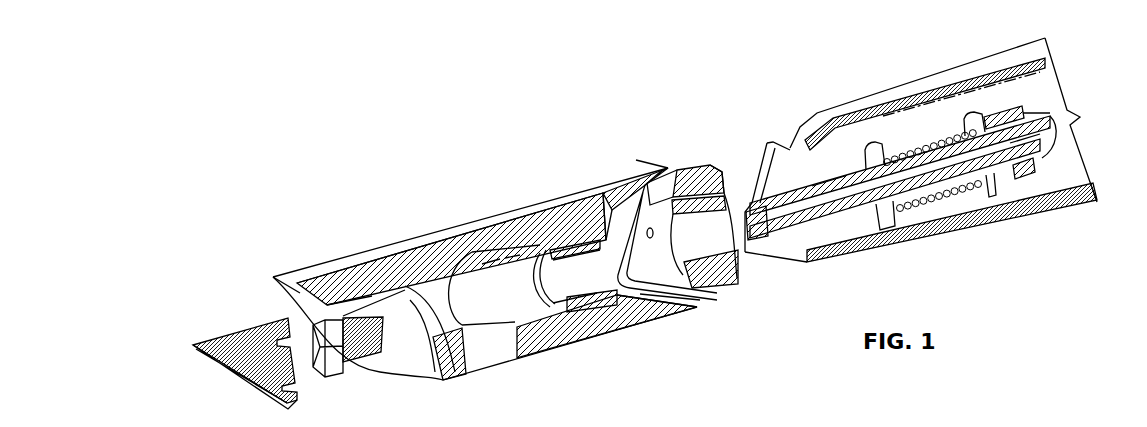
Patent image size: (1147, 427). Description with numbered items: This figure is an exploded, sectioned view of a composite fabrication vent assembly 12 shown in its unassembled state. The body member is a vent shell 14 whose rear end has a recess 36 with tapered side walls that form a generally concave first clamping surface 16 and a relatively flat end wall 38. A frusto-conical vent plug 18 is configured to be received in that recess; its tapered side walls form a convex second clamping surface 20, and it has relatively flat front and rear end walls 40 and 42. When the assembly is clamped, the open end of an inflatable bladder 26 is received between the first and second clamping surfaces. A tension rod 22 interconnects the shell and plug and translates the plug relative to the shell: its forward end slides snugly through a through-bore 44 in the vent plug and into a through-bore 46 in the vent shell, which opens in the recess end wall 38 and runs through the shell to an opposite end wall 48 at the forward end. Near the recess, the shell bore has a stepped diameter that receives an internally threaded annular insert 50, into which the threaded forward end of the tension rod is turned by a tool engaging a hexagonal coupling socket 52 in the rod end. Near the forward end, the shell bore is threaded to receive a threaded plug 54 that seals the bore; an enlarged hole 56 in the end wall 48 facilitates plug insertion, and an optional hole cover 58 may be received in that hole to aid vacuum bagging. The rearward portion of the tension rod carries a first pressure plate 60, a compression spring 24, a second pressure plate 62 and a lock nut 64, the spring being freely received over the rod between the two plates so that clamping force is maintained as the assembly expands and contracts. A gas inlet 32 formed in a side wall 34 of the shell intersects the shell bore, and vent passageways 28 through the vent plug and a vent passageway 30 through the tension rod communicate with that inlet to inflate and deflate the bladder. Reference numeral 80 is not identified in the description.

The composite fabrication vent assembly 12 is at (284, 168).
The vent shell 14 is at (381, 248).
The first clamping surface 16 is at (628, 307).
The vent plug 18 is at (692, 167).
The second clamping surface 20 is at (680, 180).
The tension rod 22 is at (847, 167).
The compression spring 24 is at (903, 147).
The inflatable bladder 26 is at (636, 163).
The vent passageways 28 is at (622, 192).
The vent passageway 30 is at (1020, 163).
The gas inlet 32 is at (483, 325).
The side wall 34 is at (557, 350).
The recess 36 is at (700, 308).
The end wall 38 is at (605, 207).
The front end wall 40 is at (692, 295).
The rear end wall 42 is at (720, 173).
The through-bore 44 is at (747, 243).
The through-bore 46 is at (507, 300).
The end wall 48 is at (278, 284).
The annular insert 50 is at (598, 302).
The coupling socket 52 is at (797, 230).
The threaded plug 54 is at (345, 372).
The enlarged hole 56 is at (372, 306).
The hole cover 58 is at (292, 406).
The first pressure plate 60 is at (897, 217).
The second pressure plate 62 is at (980, 130).
The lock nut 64 is at (1013, 107).
The ring upper portion 80 is at (565, 288).